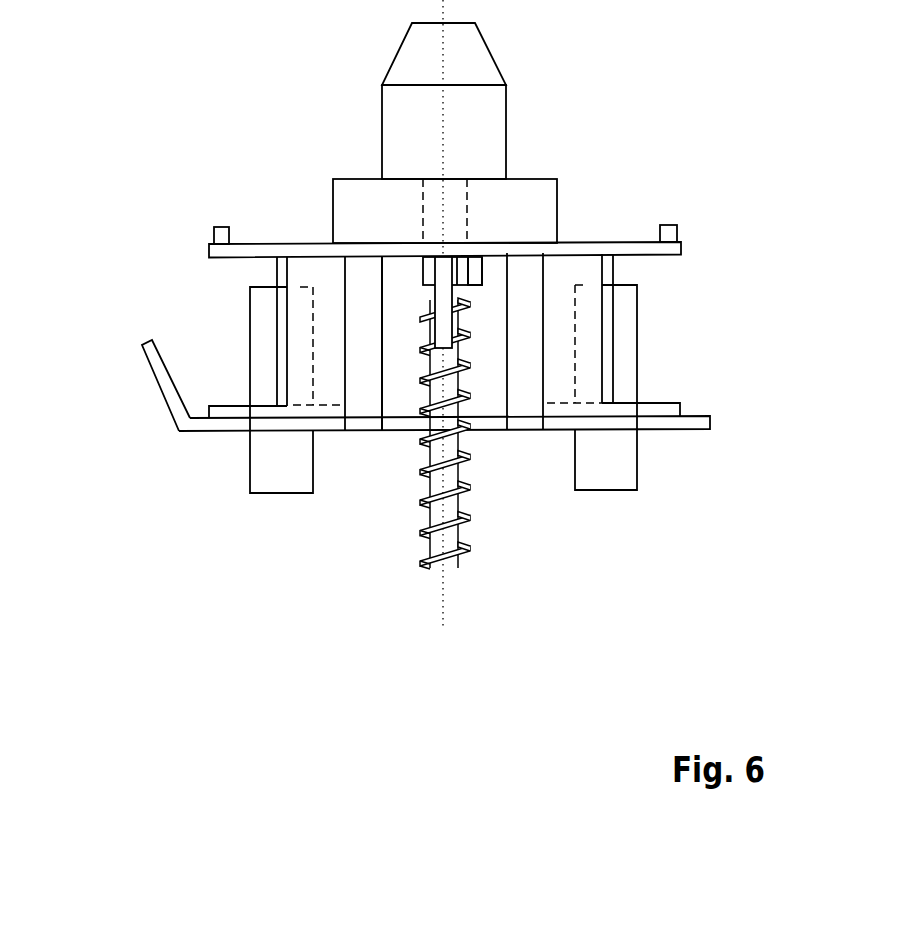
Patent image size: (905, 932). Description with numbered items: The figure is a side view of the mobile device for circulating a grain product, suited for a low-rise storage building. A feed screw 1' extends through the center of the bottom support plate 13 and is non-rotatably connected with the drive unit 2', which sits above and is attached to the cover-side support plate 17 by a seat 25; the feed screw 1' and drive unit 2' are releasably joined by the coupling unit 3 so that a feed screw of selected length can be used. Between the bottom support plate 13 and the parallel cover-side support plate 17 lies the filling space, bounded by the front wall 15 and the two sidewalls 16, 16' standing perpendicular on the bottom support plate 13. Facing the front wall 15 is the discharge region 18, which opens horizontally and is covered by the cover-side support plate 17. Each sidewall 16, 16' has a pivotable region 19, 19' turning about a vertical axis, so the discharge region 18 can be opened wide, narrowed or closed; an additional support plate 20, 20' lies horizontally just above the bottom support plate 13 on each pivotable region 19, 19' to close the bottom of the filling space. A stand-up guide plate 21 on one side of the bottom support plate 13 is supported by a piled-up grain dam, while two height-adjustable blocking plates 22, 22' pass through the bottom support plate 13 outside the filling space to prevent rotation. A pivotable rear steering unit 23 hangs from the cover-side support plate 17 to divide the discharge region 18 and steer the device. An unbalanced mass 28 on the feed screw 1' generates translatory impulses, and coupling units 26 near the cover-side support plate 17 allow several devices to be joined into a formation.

The feed screw 1' is at (467, 434).
The drive unit 2' is at (444, 101).
The coupling unit 3 is at (497, 324).
The bottom support plate 13 is at (702, 420).
The front wall 15 is at (400, 297).
The sidewall 16 is at (339, 489).
The sidewall 16' is at (545, 488).
The cover-side support plate 17 is at (623, 242).
The discharge region 18 is at (388, 513).
The pivotable region 19 is at (303, 489).
The pivotable region 19' is at (585, 488).
The additional support plate 20 is at (163, 354).
The additional support plate 20' is at (716, 372).
The guide plate 21 is at (163, 388).
The blocking plate 22 is at (192, 368).
The blocking plate 22' is at (688, 371).
The rear steering unit 23 is at (445, 283).
The seat 25 is at (492, 215).
The coupling unit 26 is at (221, 235).
The unbalanced mass 28 is at (474, 279).